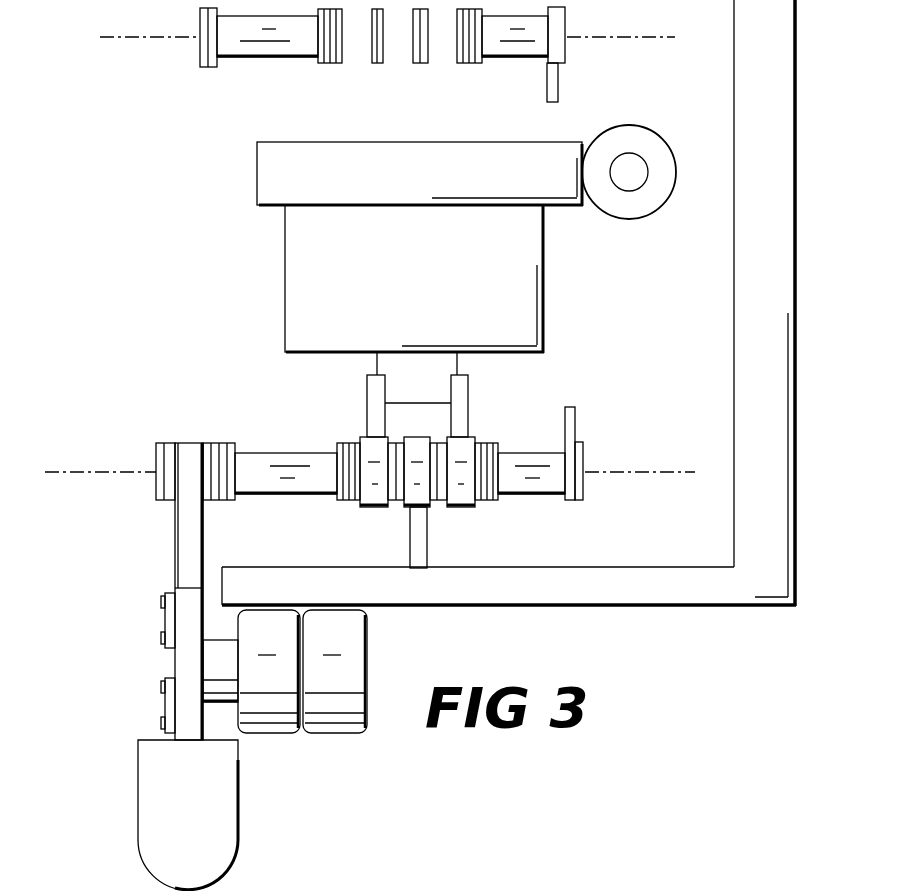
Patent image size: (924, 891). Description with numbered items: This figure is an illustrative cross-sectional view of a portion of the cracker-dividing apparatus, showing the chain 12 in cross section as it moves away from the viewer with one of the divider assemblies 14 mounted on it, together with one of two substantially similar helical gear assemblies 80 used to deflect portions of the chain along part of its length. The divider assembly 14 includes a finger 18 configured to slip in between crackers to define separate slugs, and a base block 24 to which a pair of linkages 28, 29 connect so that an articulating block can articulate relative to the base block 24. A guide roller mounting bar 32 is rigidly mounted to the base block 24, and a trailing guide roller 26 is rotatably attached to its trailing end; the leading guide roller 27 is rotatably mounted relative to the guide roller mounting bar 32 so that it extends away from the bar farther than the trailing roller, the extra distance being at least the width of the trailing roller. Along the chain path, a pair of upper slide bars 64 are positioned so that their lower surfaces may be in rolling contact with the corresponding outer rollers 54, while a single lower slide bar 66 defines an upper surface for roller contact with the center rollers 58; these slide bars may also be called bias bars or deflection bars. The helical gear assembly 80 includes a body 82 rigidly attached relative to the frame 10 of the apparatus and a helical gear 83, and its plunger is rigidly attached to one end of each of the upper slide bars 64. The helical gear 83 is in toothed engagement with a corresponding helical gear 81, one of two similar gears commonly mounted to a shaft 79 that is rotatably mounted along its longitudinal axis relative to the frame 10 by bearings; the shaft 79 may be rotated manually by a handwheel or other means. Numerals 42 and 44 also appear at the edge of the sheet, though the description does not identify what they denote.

The frame 10 is at (790, 164).
The chain 12 is at (272, 98).
The divider assembly 14 is at (200, 666).
The finger 18 is at (147, 820).
The base block 24 is at (180, 543).
The trailing guide roller 26 is at (283, 740).
The leading guide roller 27 is at (335, 740).
The linkage 28 is at (160, 625).
The linkage 29 is at (160, 710).
The guide roller mounting bar 32 is at (212, 702).
The roller 42 is at (682, 884).
The roller 44 is at (694, 884).
The outer roller 54 is at (365, 440).
The center roller 58 is at (415, 440).
The upper slide bar 64 is at (463, 380).
The lower slide bar 66 is at (423, 533).
The shaft 79 is at (621, 162).
The helical gear assembly 80 is at (363, 215).
The helical gear 81 is at (640, 210).
The body 82 is at (292, 253).
The helical gear 83 is at (342, 142).